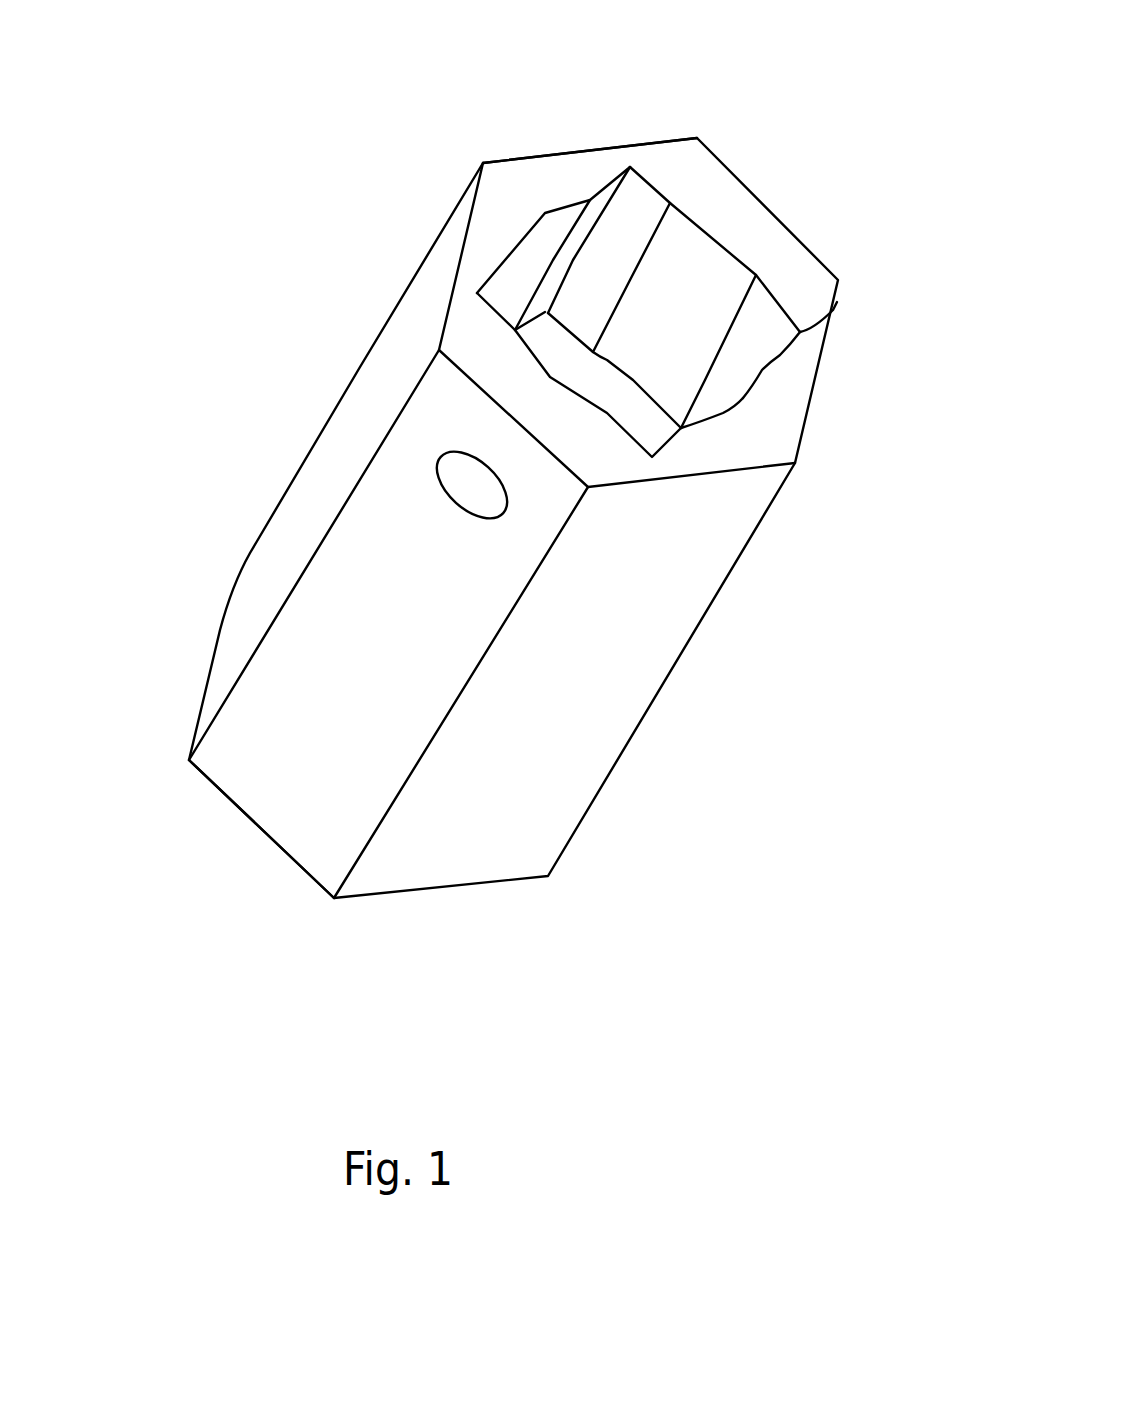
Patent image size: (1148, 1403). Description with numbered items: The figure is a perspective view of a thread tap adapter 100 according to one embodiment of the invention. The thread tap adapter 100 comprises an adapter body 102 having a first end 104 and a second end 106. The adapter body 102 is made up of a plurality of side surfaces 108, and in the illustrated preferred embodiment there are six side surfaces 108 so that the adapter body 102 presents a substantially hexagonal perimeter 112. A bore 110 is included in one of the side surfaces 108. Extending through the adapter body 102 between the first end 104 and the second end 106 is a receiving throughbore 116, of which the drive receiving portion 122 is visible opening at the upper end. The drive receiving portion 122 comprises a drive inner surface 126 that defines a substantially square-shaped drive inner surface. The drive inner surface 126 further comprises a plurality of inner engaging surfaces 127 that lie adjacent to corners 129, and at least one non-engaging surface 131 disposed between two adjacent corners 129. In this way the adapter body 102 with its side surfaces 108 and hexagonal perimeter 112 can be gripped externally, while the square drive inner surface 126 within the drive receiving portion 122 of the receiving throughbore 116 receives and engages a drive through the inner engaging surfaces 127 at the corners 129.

The thread tap adapter 100 is at (605, 843).
The adapter body 102 is at (262, 577).
The first end 104 is at (253, 827).
The second end 106 is at (765, 445).
The side surfaces 108 is at (665, 142).
The bore 110 is at (458, 478).
The hexagonal perimeter 112 is at (468, 217).
The receiving throughbore 116 is at (690, 285).
The drive receiving portion 122 is at (627, 213).
The drive inner surface 126 is at (583, 230).
The inner engaging surfaces 127 is at (780, 355).
The corners 129 is at (830, 313).
The non-engaging surface 131 is at (743, 398).